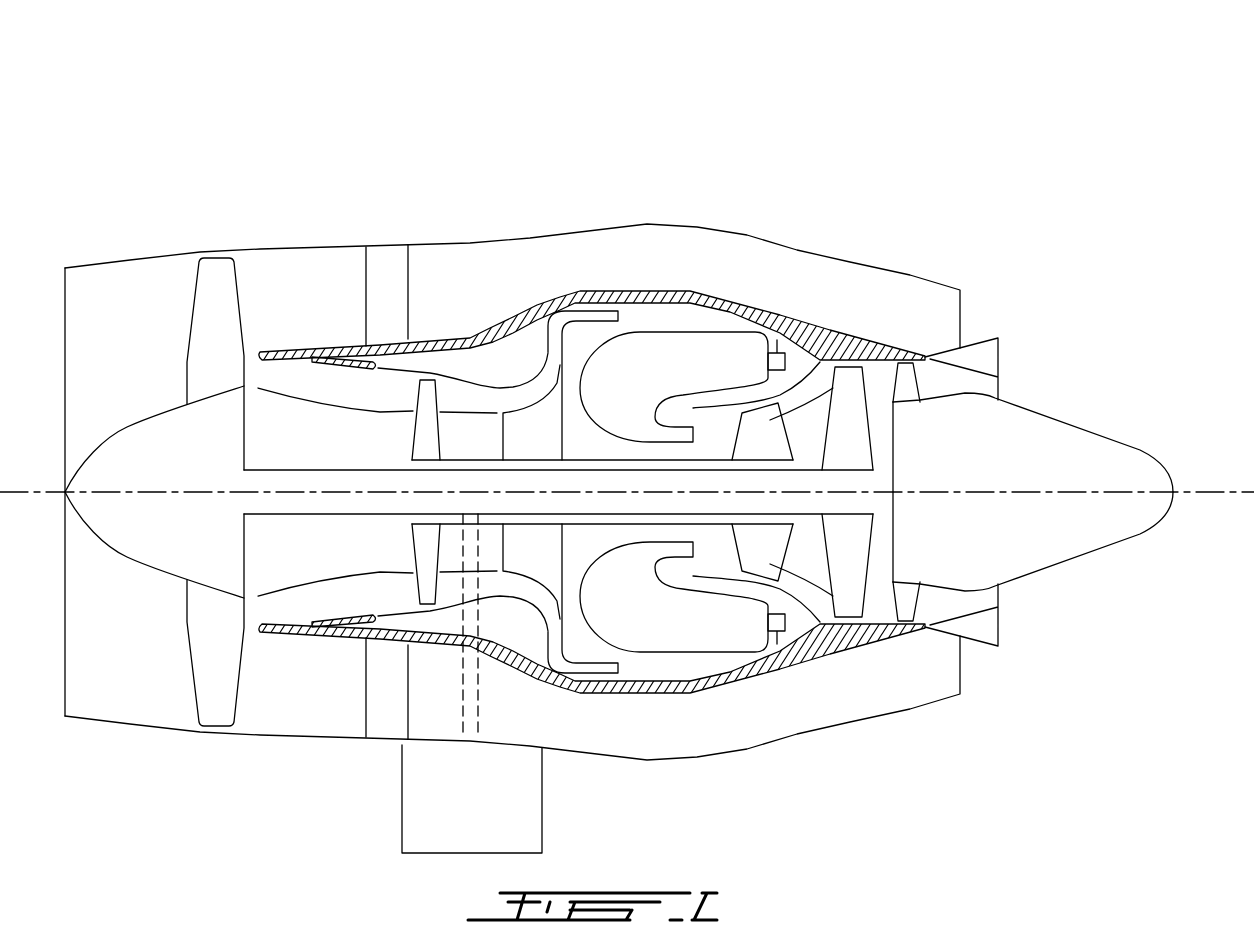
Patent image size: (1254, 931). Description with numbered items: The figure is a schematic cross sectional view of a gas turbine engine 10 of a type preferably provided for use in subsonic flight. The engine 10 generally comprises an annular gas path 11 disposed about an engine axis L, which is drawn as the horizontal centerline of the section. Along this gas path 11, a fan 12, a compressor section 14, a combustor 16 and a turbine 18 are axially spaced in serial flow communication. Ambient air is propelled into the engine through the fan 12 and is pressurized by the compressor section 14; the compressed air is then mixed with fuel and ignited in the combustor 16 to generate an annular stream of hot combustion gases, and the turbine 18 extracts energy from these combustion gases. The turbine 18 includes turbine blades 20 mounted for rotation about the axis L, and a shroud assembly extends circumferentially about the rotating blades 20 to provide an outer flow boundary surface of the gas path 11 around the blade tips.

The gas turbine engine 10 is at (832, 130).
The annular gas path 11 is at (720, 560).
The fan 12 is at (212, 642).
The compressor section 14 is at (472, 398).
The combustor 16 is at (678, 350).
The turbine 18 is at (807, 558).
The turbine blades 20 is at (770, 405).
The engine axis L is at (1217, 492).